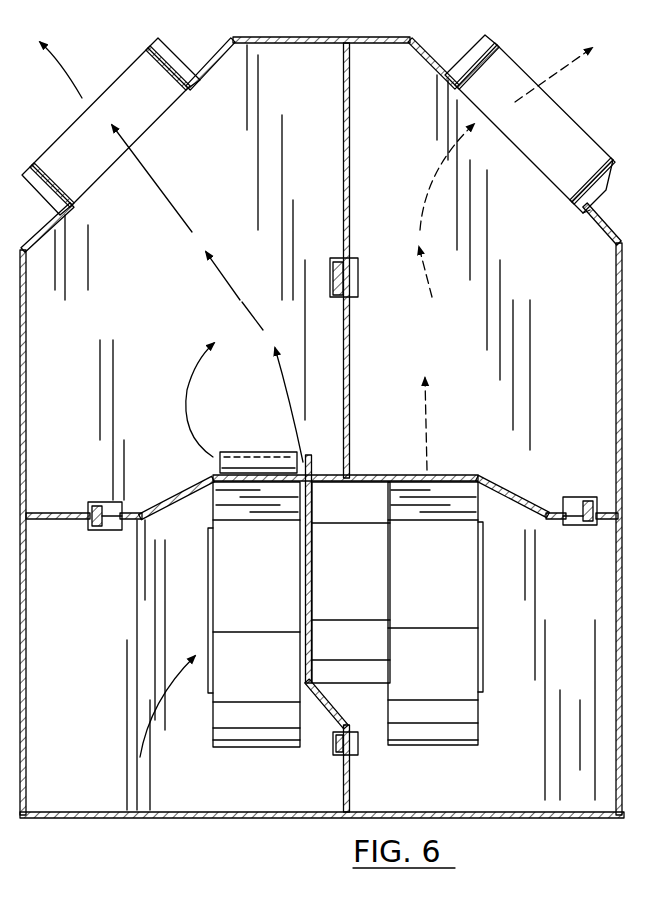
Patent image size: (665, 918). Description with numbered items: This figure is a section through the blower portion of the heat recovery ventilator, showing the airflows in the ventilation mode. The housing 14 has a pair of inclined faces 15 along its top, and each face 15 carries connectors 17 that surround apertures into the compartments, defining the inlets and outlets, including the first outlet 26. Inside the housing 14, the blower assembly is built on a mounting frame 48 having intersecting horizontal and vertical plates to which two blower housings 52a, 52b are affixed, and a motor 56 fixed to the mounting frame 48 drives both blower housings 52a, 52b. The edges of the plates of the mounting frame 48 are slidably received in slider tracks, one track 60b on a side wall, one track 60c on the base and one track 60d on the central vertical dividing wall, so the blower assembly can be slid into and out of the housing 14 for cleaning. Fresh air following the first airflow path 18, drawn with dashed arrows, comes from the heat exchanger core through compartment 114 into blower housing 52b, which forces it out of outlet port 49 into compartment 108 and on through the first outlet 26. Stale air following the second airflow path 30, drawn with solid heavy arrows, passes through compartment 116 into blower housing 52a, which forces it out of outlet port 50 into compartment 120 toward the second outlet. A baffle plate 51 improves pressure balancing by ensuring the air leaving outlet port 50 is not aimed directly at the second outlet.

The housing 14 is at (630, 298).
The inclined face 15 is at (425, 36).
The connector 17 is at (607, 174).
The first airflow path 18 is at (573, 56).
The first outlet 26 is at (510, 75).
The second airflow path 30 is at (158, 236).
The mounting frame 48 is at (510, 490).
The outlet port 49 is at (452, 473).
The outlet port 50 is at (217, 467).
The baffle plate 51 is at (247, 450).
The blower housing 52a is at (280, 588).
The blower housing 52b is at (453, 585).
The motor 56 is at (357, 602).
The slider track 60b is at (577, 503).
The slider track 60c is at (333, 747).
The slider track 60d is at (337, 263).
The compartment 108 is at (560, 245).
The compartment 114 is at (527, 651).
The compartment 116 is at (95, 629).
The compartment 120 is at (157, 252).